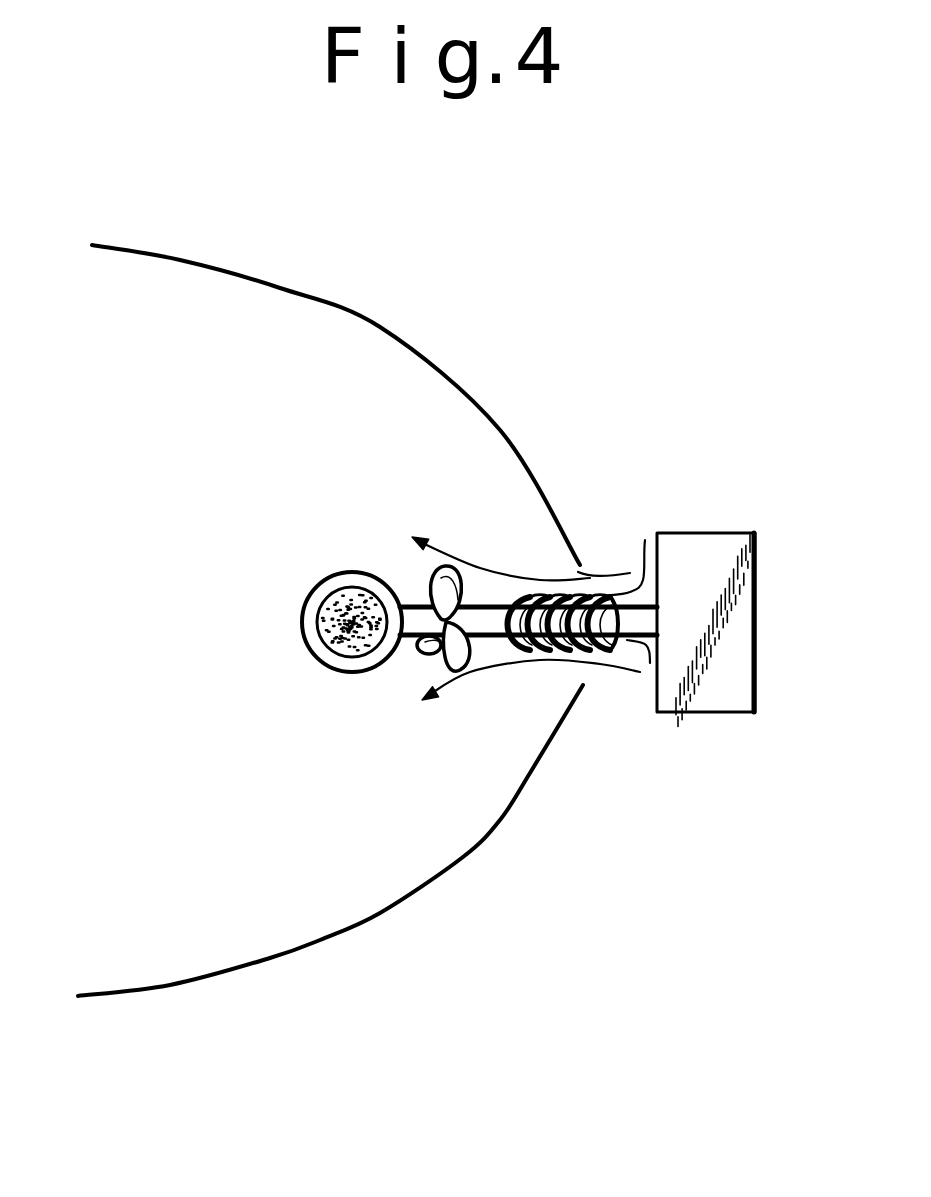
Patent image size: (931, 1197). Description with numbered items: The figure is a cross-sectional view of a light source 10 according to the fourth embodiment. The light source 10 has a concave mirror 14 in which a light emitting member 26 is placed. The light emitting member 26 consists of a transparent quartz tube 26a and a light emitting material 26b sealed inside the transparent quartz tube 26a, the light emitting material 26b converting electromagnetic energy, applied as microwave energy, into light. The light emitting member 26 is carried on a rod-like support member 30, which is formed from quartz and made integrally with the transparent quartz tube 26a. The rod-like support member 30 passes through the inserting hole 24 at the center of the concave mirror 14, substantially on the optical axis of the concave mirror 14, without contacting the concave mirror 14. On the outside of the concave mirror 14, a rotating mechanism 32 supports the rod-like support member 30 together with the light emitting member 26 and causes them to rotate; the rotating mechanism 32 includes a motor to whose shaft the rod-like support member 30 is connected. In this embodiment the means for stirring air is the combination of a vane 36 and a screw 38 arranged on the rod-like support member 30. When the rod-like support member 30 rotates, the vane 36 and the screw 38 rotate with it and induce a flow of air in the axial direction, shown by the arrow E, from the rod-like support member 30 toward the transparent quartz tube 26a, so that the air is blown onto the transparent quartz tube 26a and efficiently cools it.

The light source 10 is at (514, 406).
The concave mirror 14 is at (395, 332).
The inserting hole 24 is at (578, 571).
The light emitting member 26 is at (308, 592).
The transparent quartz tube 26a is at (335, 630).
The light emitting material 26b is at (350, 577).
The rod-like support member 30 is at (650, 663).
The rotating mechanism 32 is at (700, 555).
The vane 36 is at (415, 678).
The screw 38 is at (645, 540).
The arrow E is at (501, 553).